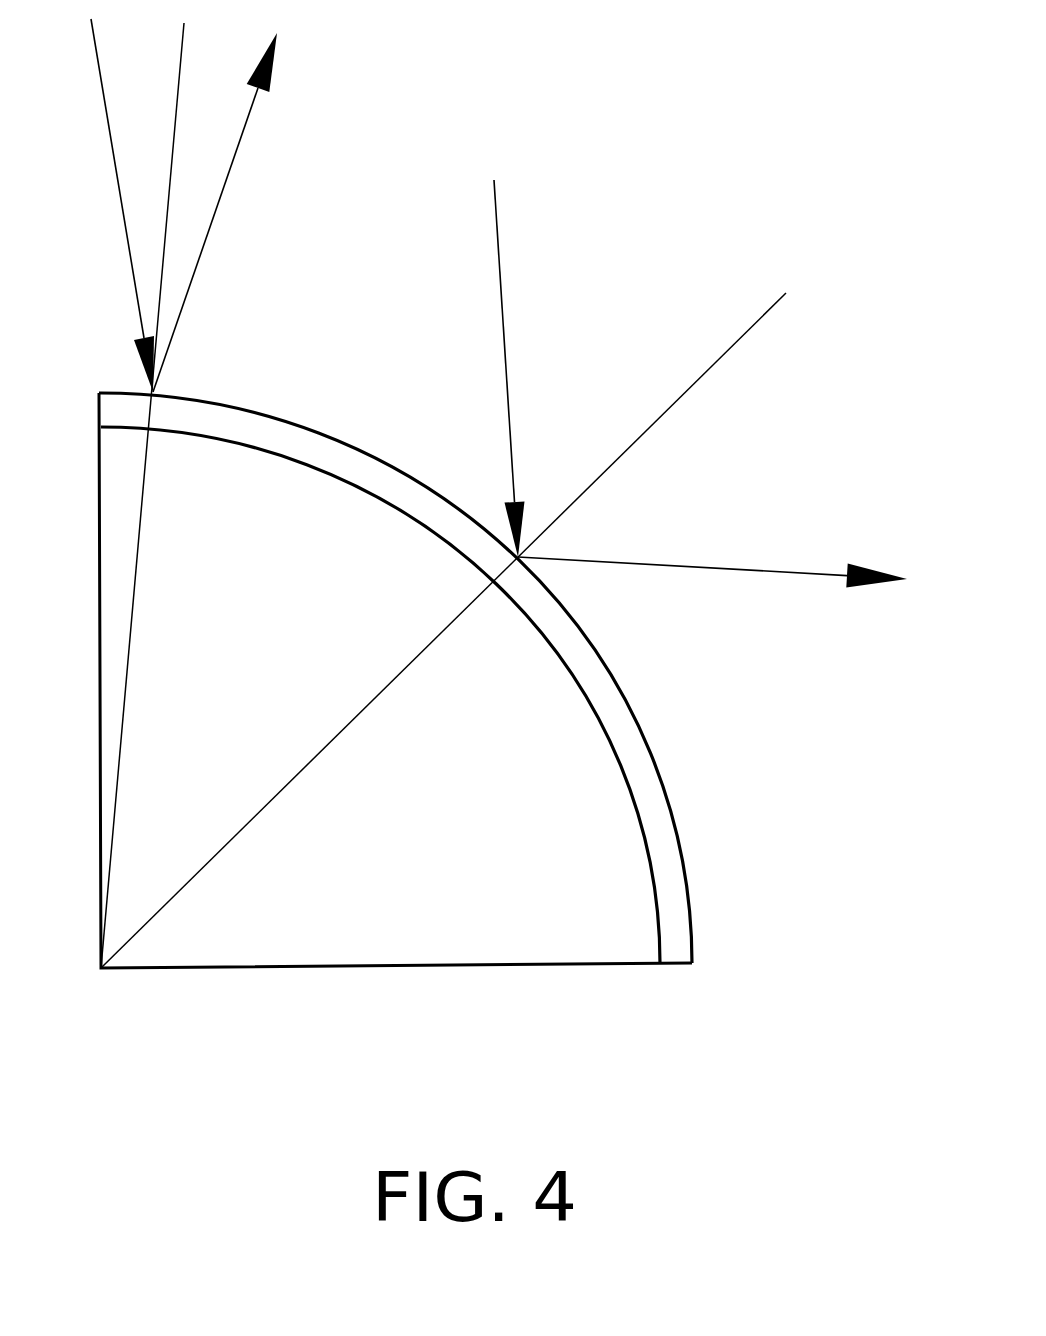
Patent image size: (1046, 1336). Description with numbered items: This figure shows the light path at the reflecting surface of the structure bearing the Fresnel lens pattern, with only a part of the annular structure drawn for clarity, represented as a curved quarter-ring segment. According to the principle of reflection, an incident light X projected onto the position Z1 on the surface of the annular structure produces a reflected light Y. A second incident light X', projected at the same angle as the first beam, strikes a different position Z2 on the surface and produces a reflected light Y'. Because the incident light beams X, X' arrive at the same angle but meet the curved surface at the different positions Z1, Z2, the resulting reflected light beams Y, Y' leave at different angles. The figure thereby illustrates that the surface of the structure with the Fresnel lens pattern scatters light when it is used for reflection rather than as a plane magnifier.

The incident light X is at (89, 205).
The reflected light Y is at (261, 212).
The position Z1 is at (155, 395).
The incident light X' is at (586, 368).
The reflected light Y' is at (717, 526).
The position Z2 is at (518, 557).